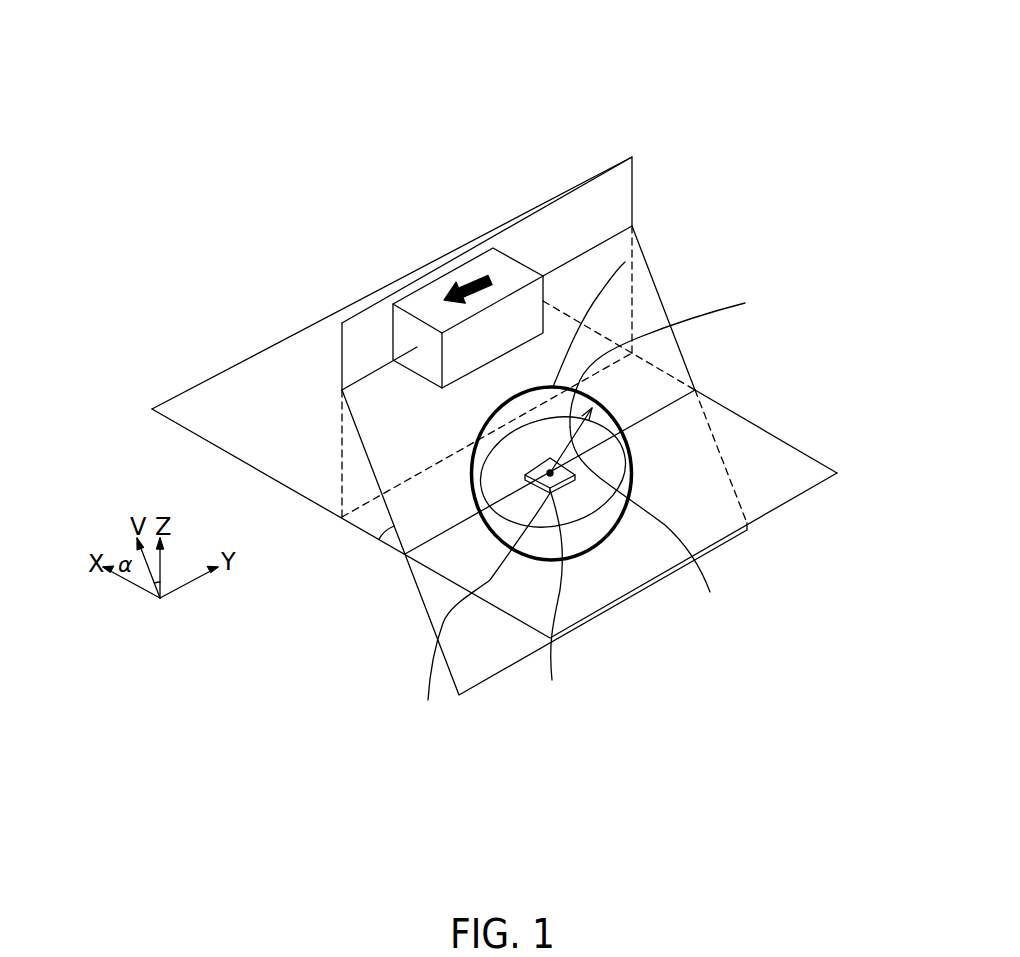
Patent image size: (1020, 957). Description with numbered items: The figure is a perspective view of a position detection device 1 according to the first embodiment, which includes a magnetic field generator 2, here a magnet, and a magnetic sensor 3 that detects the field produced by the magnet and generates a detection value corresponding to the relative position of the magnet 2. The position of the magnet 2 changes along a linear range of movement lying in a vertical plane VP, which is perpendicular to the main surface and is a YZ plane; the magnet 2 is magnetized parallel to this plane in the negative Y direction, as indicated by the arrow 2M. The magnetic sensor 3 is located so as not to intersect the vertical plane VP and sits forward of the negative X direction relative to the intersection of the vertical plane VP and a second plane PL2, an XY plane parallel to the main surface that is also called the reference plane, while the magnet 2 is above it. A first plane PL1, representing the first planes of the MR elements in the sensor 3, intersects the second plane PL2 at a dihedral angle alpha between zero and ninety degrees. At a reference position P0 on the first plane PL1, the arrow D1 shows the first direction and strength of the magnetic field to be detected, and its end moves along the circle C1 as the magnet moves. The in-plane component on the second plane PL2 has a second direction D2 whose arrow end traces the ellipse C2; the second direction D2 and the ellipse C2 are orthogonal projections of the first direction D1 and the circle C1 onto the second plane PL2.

The position detection device 1 is at (630, 77).
The magnetic field generator 2 is at (500, 253).
The direction of magnetization 2M is at (466, 272).
The magnetic sensor 3 is at (565, 488).
The vertical plane VP is at (389, 292).
The first plane PL1 is at (665, 310).
The second plane PL2 is at (762, 427).
The circle C1 is at (625, 262).
The ellipse C2 is at (553, 601).
The first direction D1 is at (671, 357).
The second direction D2 is at (652, 529).
The reference position P0 is at (481, 615).